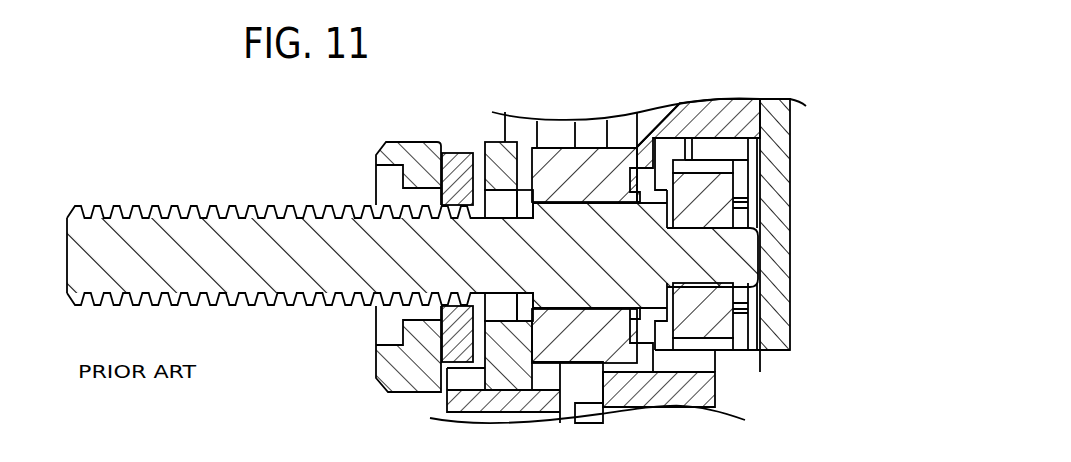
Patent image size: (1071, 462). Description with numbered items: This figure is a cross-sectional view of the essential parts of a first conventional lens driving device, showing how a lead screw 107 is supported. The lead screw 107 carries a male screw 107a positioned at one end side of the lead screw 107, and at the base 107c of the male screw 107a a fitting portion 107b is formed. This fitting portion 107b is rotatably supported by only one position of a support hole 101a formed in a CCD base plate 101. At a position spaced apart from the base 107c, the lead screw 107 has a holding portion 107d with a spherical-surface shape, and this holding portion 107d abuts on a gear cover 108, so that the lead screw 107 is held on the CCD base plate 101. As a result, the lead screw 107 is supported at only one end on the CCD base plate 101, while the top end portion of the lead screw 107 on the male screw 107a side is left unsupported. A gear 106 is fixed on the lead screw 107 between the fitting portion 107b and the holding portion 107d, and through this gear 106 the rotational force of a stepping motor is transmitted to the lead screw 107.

The CCD base plate 101 is at (710, 392).
The support hole 101a is at (567, 205).
The gear 106 is at (723, 186).
The lead screw 107 is at (197, 242).
The male screw 107a is at (307, 207).
The fitting portion 107b is at (617, 208).
The base 107c is at (508, 228).
The holding portion 107d is at (750, 250).
The gear cover 108 is at (776, 297).